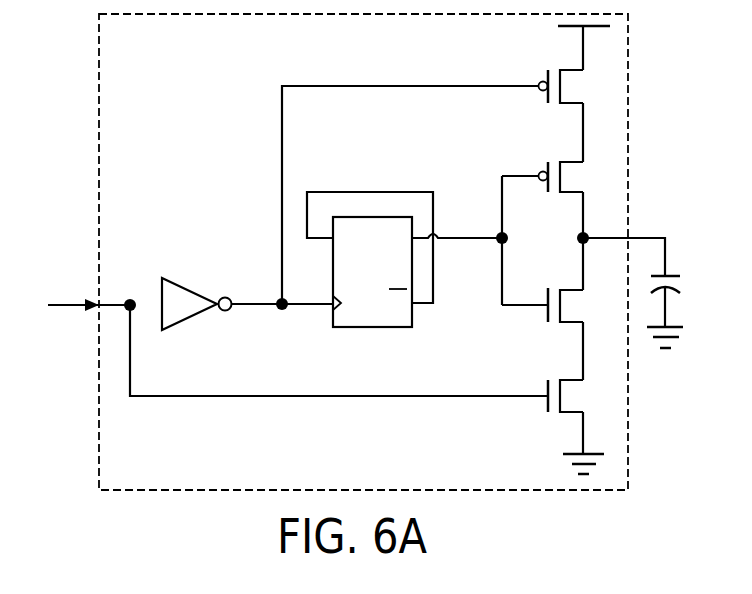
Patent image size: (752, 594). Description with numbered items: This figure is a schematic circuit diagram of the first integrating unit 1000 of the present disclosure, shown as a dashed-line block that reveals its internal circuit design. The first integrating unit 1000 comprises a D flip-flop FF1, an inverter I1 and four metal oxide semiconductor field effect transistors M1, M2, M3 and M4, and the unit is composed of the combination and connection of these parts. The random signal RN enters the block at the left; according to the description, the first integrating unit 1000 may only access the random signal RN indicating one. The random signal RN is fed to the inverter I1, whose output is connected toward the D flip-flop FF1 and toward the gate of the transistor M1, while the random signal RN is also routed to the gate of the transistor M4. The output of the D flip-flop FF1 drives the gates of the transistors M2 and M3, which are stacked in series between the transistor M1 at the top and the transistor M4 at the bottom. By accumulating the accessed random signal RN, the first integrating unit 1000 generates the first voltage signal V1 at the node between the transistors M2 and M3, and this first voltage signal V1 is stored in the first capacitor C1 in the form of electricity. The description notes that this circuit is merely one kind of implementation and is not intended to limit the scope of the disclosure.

The first integrating unit 1000 is at (99, 103).
The random signal RN is at (92, 294).
The inverter I1 is at (190, 317).
The D flip-flop FF1 is at (370, 327).
The metal oxide semiconductor field effect transistor M1 is at (575, 86).
The metal oxide semiconductor field effect transistor M2 is at (575, 177).
The metal oxide semiconductor field effect transistor M3 is at (580, 305).
The metal oxide semiconductor field effect transistor M4 is at (580, 396).
The first voltage signal V1 is at (628, 244).
The first capacitor C1 is at (678, 309).